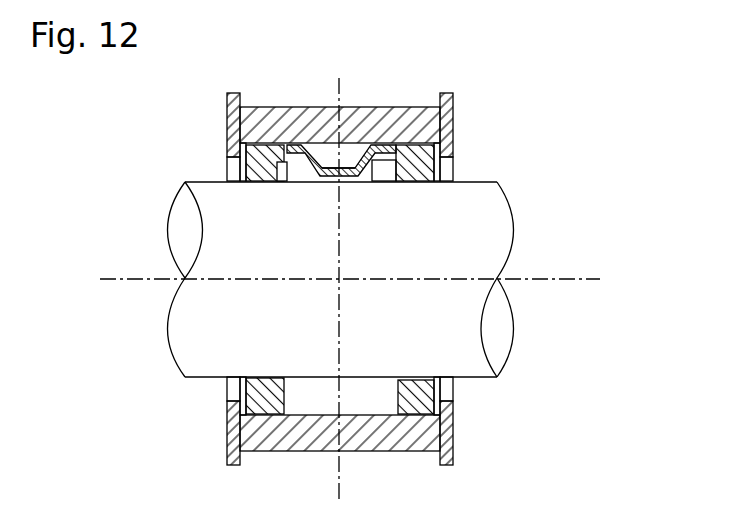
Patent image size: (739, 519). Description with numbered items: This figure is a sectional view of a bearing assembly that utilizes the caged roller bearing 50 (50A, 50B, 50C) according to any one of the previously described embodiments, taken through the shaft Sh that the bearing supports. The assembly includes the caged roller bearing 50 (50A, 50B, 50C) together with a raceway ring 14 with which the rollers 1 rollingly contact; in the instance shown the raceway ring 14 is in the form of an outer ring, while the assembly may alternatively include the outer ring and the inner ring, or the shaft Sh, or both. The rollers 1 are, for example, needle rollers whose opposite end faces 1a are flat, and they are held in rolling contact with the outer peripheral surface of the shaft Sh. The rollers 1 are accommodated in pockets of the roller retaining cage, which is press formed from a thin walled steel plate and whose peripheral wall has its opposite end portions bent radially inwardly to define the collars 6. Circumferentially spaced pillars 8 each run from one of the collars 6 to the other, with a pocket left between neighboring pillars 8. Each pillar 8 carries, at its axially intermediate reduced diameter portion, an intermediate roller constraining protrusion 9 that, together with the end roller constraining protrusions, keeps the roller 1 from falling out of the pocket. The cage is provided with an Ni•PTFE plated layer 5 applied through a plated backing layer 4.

The shaft Sh is at (462, 254).
The caged roller bearing 50 is at (477, 310).
The caged roller bearing 50A is at (477, 310).
The caged roller bearing 50B is at (477, 310).
The caged roller bearing 50C is at (477, 310).
The raceway ring 14 is at (274, 443).
The pillar 8 is at (228, 116).
The collar 6 is at (243, 166).
The roller 1 is at (240, 144).
The end face 1a is at (438, 398).
The Ni•PTFE plated layer 5 is at (326, 117).
The plated backing layer 4 is at (326, 117).
The intermediate roller constraining protrusion 9 is at (333, 163).